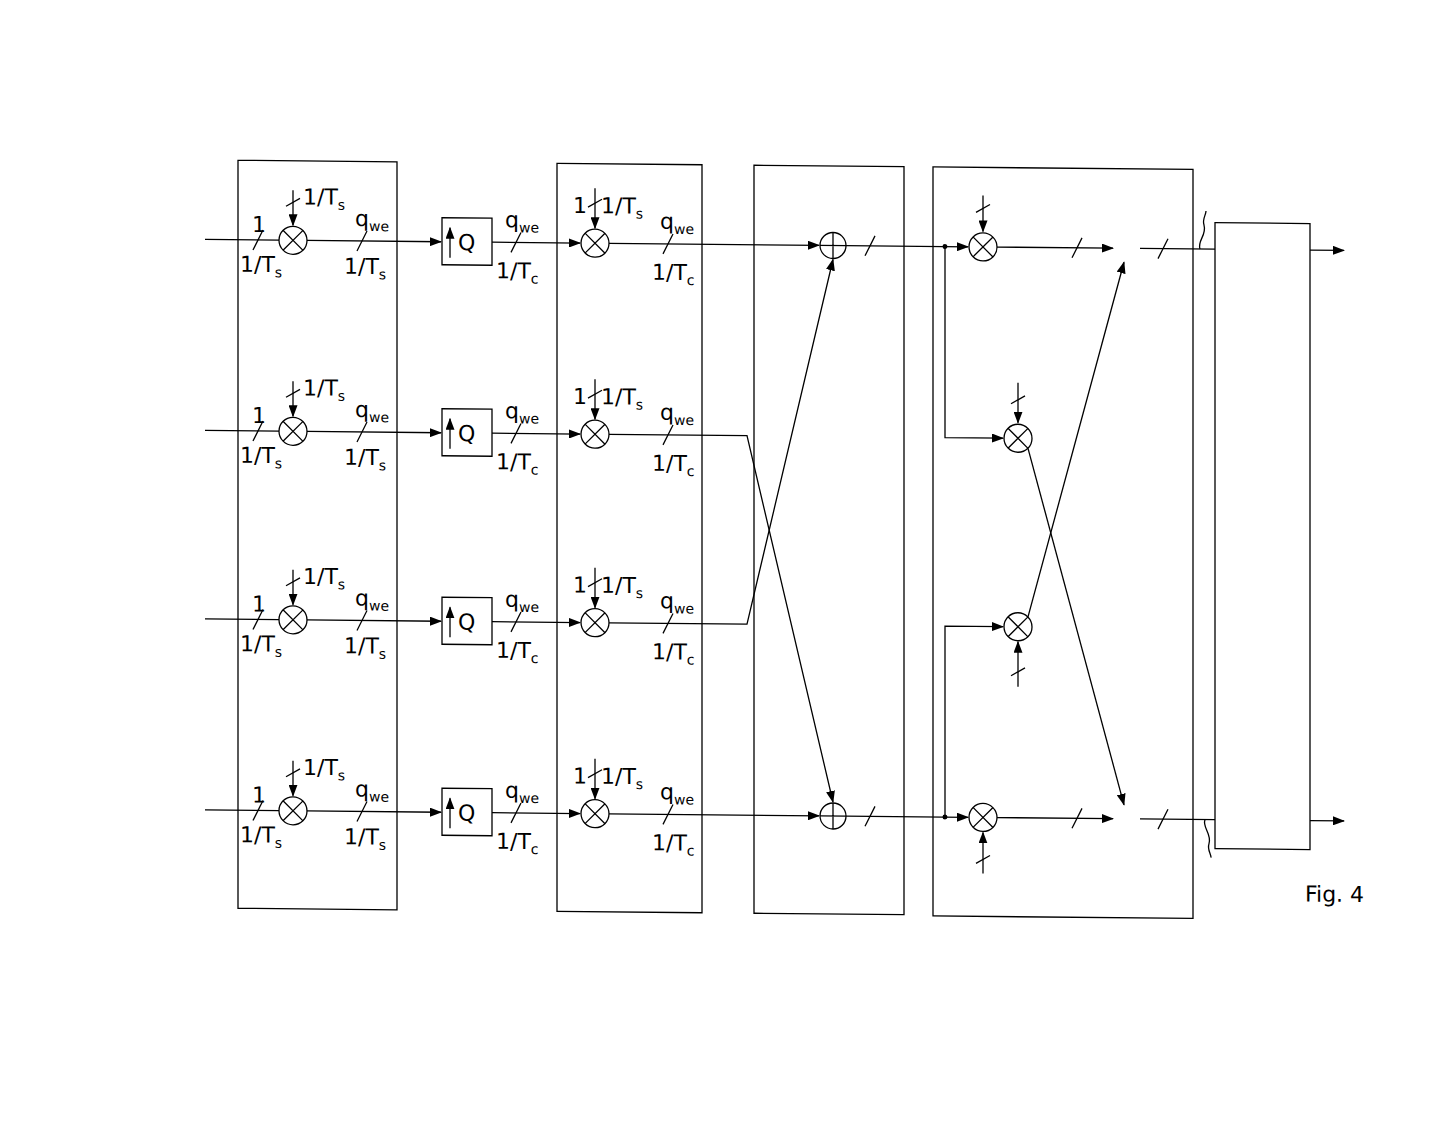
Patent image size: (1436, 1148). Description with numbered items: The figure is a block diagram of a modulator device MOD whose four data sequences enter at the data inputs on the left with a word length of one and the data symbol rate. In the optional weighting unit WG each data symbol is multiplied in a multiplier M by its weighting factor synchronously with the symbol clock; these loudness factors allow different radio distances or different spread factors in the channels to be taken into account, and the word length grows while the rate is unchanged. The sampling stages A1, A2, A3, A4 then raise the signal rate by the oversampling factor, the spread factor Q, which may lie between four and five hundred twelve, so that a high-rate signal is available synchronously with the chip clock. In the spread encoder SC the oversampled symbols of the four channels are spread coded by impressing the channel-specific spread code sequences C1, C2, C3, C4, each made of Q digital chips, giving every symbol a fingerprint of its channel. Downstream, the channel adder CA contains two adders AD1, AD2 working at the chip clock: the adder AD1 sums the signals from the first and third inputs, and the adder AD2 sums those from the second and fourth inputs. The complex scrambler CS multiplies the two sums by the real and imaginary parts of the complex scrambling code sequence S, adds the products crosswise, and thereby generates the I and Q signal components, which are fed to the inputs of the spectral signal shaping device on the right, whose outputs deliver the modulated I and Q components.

The modulator device MOD is at (1253, 111).
The weighting unit WG is at (334, 895).
The spread encoder SC is at (645, 895).
The channel adder CA is at (849, 895).
The complex scrambler CS is at (1077, 895).
The multiplier M is at (297, 252).
The sampling stage A1 is at (466, 261).
The sampling stage A2 is at (466, 452).
The sampling stage A3 is at (466, 641).
The sampling stage A4 is at (465, 784).
The first spread code sequence C1 is at (635, 210).
The spread code sequence C2 is at (595, 385).
The spread code sequence C3 is at (595, 574).
The spread code sequence C4 is at (595, 766).
The adder AD1 is at (828, 224).
The adder AD2 is at (823, 821).
The complex scrambling code sequence S is at (1010, 540).